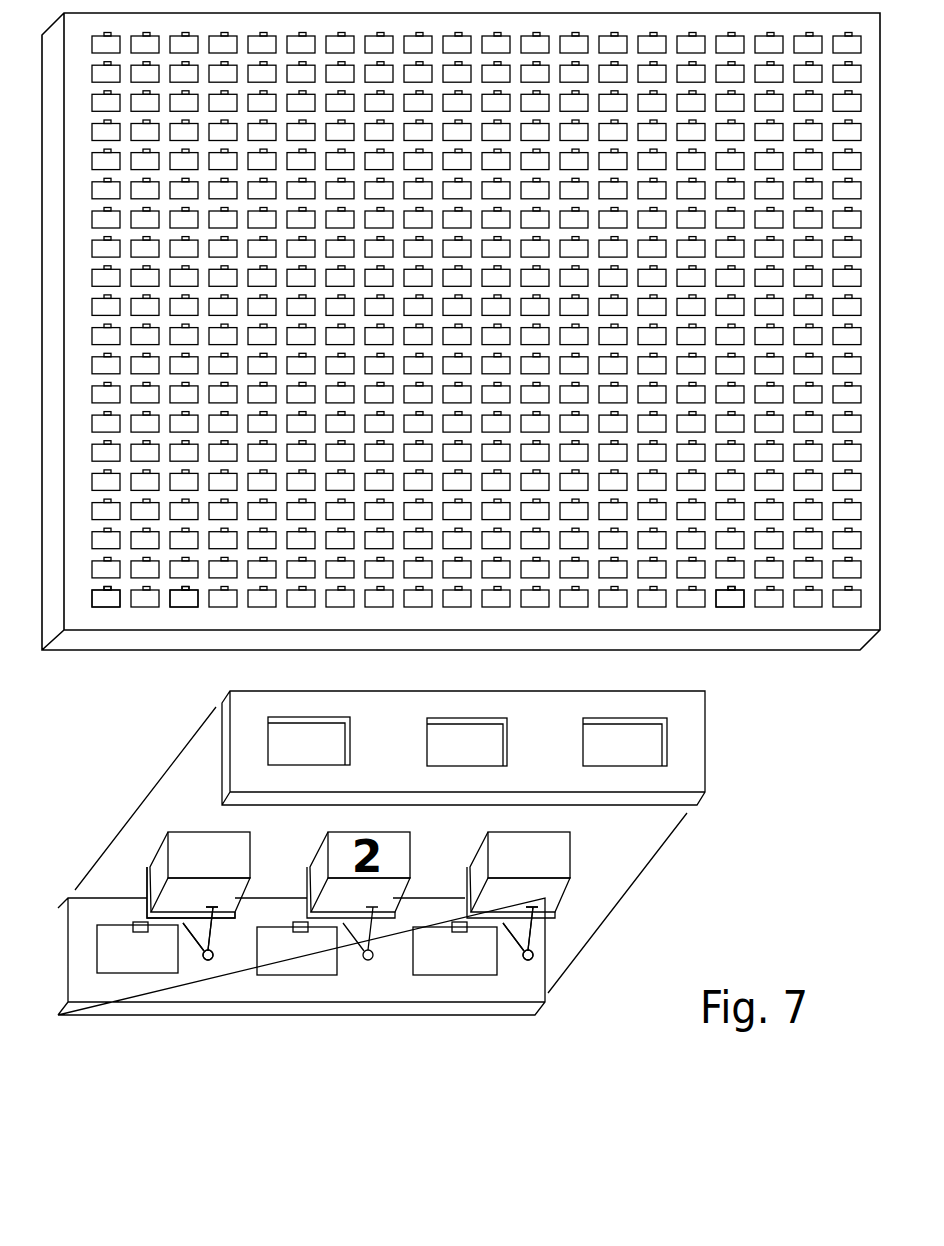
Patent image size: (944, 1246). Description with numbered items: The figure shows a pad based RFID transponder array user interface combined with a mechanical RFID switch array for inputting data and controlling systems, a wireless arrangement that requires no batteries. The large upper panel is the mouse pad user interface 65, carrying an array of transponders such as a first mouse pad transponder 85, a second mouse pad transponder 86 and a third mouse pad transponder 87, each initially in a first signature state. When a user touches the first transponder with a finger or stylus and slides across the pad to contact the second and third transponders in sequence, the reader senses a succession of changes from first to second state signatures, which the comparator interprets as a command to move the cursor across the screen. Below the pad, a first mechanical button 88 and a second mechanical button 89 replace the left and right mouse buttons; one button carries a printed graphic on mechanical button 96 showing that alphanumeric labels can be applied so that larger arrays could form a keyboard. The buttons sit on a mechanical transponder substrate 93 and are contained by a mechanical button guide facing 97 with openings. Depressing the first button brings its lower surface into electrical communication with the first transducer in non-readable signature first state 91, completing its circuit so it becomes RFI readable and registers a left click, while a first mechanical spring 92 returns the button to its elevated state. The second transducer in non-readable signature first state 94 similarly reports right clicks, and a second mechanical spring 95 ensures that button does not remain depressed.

The mouse pad user interface 65 is at (760, 630).
The first mouse pad transponder 85 is at (103, 607).
The second mouse pad transponder 86 is at (183, 607).
The third mouse pad transponder 87 is at (728, 607).
The first mechanical button 88 is at (158, 872).
The second mechanical button 89 is at (557, 893).
The first transducer in non-readable signature first state 91 is at (108, 973).
The first mechanical spring 92 is at (210, 960).
The mechanical transponder substrate 93 is at (325, 1002).
The second transducer in non-readable signature first state 94 is at (468, 975).
The second mechanical spring 95 is at (532, 937).
The printed graphic on mechanical button 96 is at (205, 855).
The mechanical button guide facing 97 is at (687, 780).